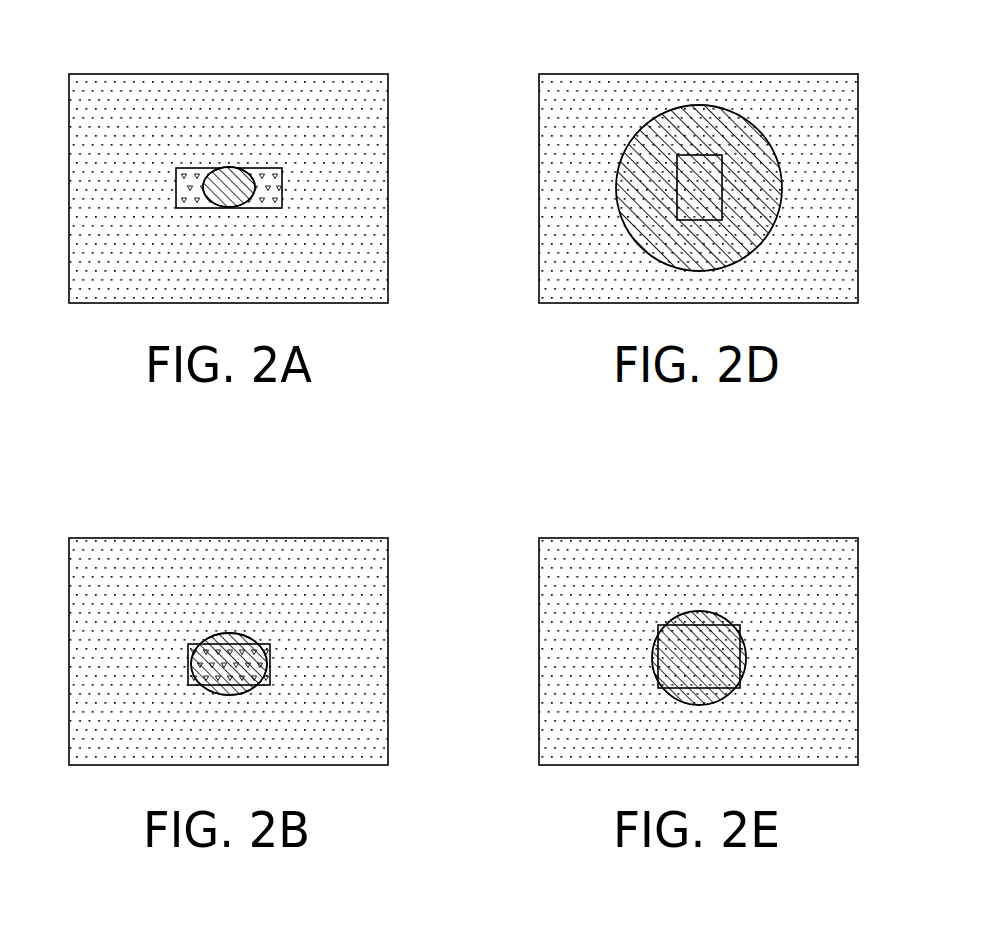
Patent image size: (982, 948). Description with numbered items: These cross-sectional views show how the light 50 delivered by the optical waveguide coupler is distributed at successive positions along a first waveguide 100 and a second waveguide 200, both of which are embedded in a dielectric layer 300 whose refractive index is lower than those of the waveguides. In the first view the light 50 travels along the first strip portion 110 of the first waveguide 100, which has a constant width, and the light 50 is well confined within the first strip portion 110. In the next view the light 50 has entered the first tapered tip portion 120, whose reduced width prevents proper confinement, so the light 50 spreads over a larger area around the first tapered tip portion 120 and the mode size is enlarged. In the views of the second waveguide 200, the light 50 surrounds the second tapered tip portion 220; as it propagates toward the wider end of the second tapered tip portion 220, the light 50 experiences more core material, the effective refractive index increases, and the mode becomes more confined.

In FIG. 2A, the light 50 is at (203, 185).
In FIG. 2D, the light 50 is at (622, 156).
In FIG. 2B, the light 50 is at (238, 634).
In FIG. 2E, the light 50 is at (699, 611).
In FIG. 2A, the first waveguide 100 is at (259, 117).
In FIG. 2B, the first waveguide 100 is at (300, 589).
In FIG. 2A, the first strip portion 110 is at (267, 168).
In FIG. 2B, the first tapered tip portion 120 is at (272, 648).
In FIG. 2D, the second waveguide 200 is at (722, 123).
In FIG. 2E, the second waveguide 200 is at (765, 590).
In FIG. 2D, the second tapered tip portion 220 is at (705, 155).
In FIG. 2E, the second tapered tip portion 220 is at (742, 627).
In FIG. 2A, the dielectric layer 300 is at (69, 130).
In FIG. 2D, the dielectric layer 300 is at (858, 193).
In FIG. 2B, the dielectric layer 300 is at (69, 646).
In FIG. 2E, the dielectric layer 300 is at (858, 648).